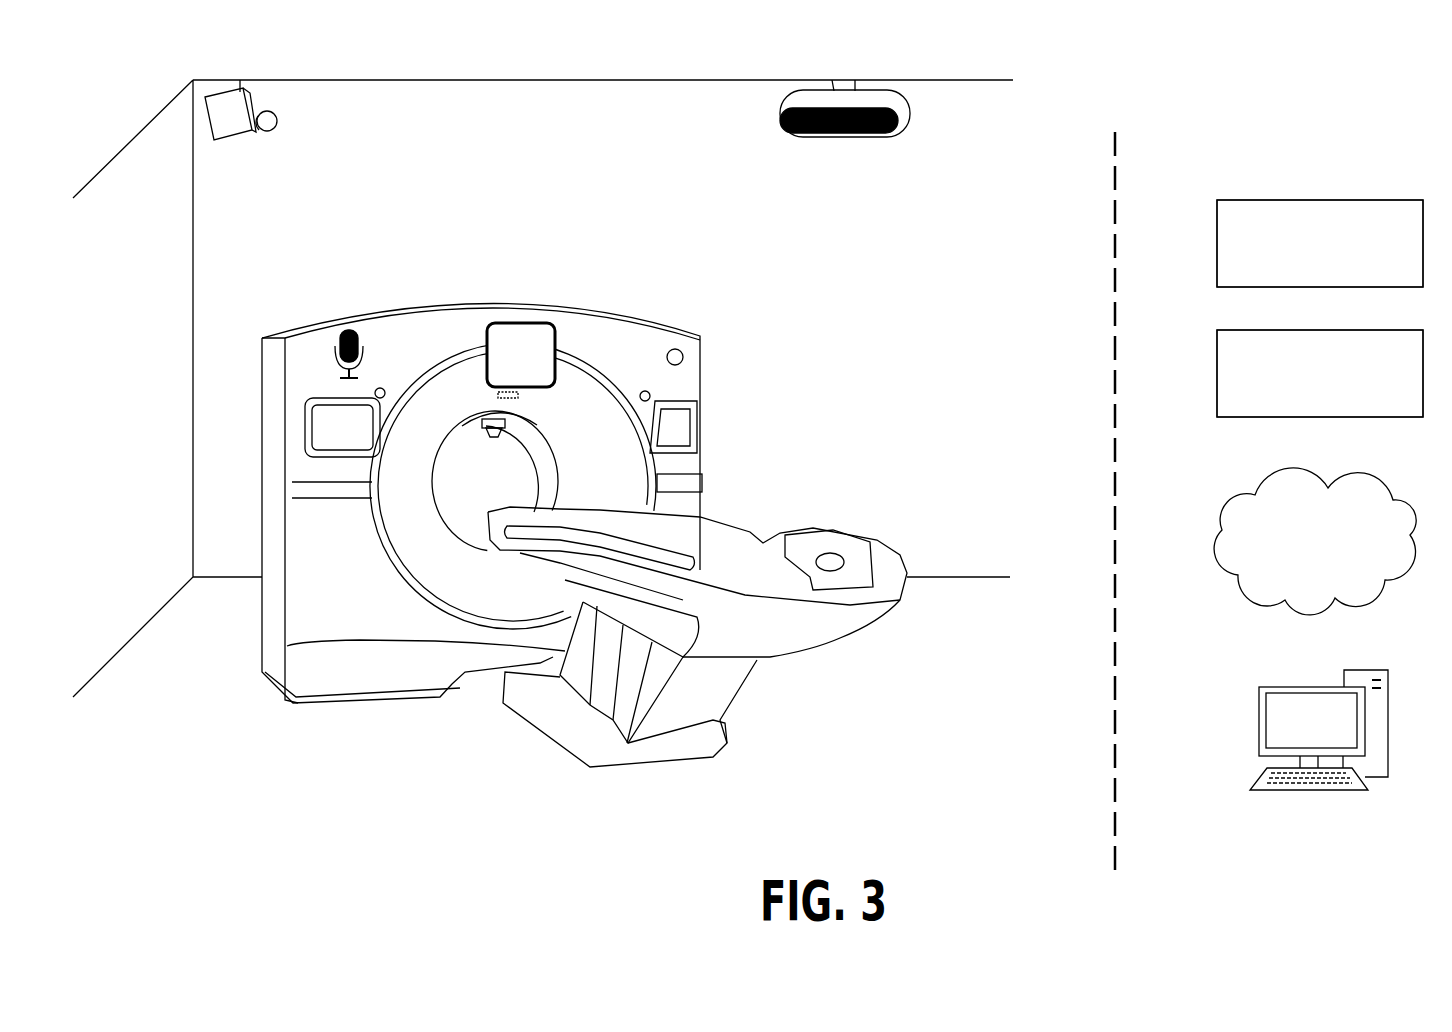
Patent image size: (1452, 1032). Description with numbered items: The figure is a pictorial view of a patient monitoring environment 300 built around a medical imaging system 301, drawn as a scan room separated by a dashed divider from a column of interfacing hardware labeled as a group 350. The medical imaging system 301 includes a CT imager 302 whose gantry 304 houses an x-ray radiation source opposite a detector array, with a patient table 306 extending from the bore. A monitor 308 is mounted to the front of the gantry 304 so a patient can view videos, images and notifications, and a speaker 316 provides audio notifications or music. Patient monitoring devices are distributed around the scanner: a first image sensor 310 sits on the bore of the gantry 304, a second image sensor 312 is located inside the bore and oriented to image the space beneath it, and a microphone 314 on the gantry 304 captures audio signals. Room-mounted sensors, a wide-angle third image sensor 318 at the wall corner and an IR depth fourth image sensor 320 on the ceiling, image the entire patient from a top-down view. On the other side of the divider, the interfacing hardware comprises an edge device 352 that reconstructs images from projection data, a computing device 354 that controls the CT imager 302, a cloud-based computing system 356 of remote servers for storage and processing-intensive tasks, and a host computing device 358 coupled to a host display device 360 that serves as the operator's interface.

The patient monitoring environment 300 is at (1382, 57).
The medical imaging system 301 is at (1059, 83).
The CT imager 302 is at (650, 275).
The gantry 304 is at (595, 368).
The table 306 is at (757, 535).
The monitor 308 is at (533, 323).
The first image sensor 310 is at (518, 398).
The second image sensor 312 is at (495, 438).
The microphone 314 is at (360, 337).
The speaker 316 is at (681, 352).
The third image sensor 318 is at (253, 134).
The fourth image sensor 320 is at (890, 133).
The computing environment 350 is at (1382, 166).
The edge device 352 is at (1403, 256).
The computing device 354 is at (1335, 399).
The cloud-based computing system 356 is at (1370, 559).
The host computing device 358 is at (1370, 670).
The host display device 360 is at (1297, 687).